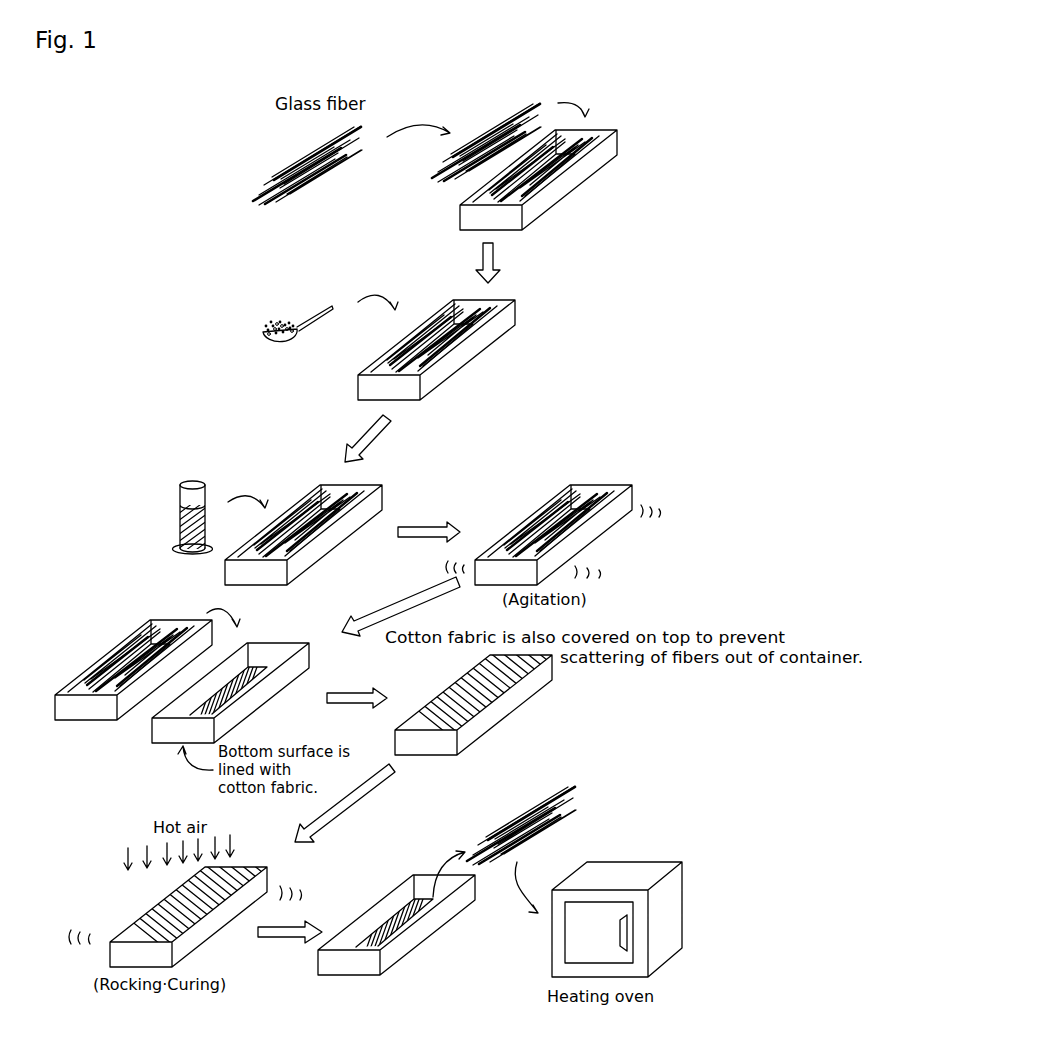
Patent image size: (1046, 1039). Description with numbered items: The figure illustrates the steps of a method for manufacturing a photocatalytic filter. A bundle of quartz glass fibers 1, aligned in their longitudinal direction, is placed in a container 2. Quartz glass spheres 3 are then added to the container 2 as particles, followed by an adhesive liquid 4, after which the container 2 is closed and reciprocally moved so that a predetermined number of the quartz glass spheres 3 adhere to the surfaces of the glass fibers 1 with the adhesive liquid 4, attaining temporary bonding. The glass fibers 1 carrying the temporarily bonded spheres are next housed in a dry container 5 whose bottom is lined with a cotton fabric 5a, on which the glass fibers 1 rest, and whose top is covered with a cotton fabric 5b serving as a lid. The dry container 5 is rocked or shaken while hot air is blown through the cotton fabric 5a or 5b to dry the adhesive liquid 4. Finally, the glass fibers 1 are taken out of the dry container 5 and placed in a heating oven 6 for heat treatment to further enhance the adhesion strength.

The glass fibers 1 is at (285, 178).
The container 2 is at (567, 195).
The quartz glass spheres 3 is at (270, 320).
The adhesive liquid 4 is at (180, 518).
The dry container 5 is at (260, 703).
The cotton fabric 5a is at (257, 670).
The cotton fabric 5b is at (452, 685).
The heating oven 6 is at (633, 863).